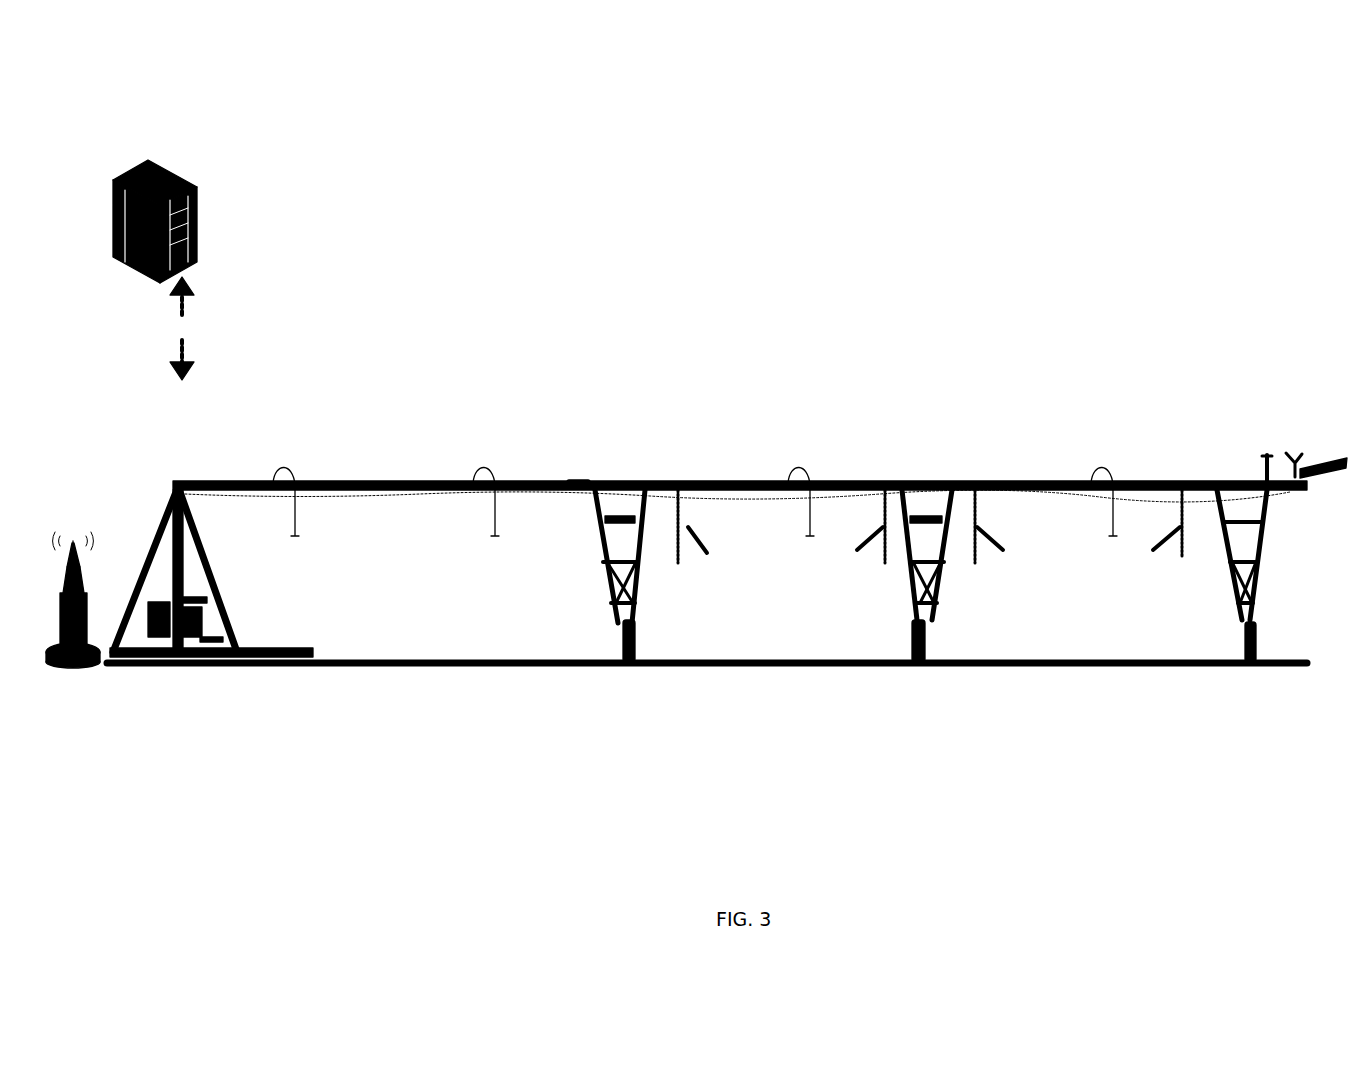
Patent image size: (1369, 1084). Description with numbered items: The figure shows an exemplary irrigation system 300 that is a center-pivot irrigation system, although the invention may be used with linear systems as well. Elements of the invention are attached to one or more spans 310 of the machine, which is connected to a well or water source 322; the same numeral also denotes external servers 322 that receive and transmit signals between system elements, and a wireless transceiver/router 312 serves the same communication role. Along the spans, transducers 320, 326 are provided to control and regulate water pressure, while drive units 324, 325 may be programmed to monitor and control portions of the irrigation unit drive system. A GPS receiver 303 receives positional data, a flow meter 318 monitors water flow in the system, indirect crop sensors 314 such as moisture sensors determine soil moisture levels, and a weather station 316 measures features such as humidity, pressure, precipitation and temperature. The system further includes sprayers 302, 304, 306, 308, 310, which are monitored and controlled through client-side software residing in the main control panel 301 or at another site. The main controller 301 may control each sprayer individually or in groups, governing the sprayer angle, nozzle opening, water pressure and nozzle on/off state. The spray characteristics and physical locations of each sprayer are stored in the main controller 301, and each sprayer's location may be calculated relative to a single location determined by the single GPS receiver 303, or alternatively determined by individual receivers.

The irrigation system 300 is at (670, 150).
The main control panel 301 is at (147, 633).
The sprayer 302 is at (298, 522).
The GPS receiver 303 is at (1295, 462).
The sprayer 304 is at (497, 522).
The sprayer 306 is at (810, 522).
The sprayer 308 is at (1113, 522).
The span 310 is at (418, 482).
The wireless transceiver/router 312 is at (186, 597).
The indirect crop sensor 314 is at (692, 490).
The weather station 316 is at (73, 540).
The flow meter 318 is at (207, 640).
The transducer 320 is at (148, 602).
The well or water source / external server 322 is at (113, 183).
The drive unit 324 is at (620, 517).
The drive unit 325 is at (917, 517).
The transducer 326 is at (572, 480).